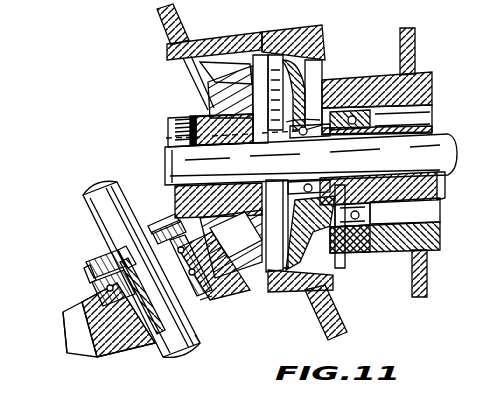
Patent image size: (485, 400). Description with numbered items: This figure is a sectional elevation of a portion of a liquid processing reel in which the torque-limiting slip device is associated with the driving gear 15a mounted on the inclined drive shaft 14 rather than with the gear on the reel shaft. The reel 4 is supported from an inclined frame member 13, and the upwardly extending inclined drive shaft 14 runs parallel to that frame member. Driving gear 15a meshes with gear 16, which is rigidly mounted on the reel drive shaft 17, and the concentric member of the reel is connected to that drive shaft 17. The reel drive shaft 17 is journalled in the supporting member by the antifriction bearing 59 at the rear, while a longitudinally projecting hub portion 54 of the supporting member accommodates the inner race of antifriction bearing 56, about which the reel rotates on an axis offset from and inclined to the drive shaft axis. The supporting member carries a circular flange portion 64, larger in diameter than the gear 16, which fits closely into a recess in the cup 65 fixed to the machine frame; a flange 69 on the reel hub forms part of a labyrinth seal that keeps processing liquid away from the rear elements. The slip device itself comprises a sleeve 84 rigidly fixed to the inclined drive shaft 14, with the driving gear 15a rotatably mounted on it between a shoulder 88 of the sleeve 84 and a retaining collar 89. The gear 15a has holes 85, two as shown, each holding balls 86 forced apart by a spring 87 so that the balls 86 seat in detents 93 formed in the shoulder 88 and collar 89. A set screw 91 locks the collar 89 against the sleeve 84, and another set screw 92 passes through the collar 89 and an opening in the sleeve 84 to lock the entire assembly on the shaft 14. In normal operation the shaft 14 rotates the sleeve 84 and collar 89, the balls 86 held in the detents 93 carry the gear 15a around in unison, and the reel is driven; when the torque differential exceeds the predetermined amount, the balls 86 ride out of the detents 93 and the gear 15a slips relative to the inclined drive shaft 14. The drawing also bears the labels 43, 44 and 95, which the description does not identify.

The inclined frame member 13 is at (340, 322).
The inclined drive shaft 14 is at (199, 342).
The driving gear 15a is at (88, 352).
The gear 16 is at (198, 115).
The reel drive shaft 17 is at (170, 162).
The housing 43 is at (477, 6).
The bearing housing 44 is at (378, 82).
The hub portion 54 is at (440, 180).
The antifriction bearing 56 is at (368, 228).
The antifriction bearing 59 is at (318, 182).
The flange portion 64 is at (322, 58).
The cup 65 is at (277, 30).
The flange 69 is at (418, 60).
The sleeve 84 is at (155, 348).
The holes 85 is at (115, 318).
The balls 86 is at (96, 300).
The spring 87 is at (143, 296).
The shoulder 88 is at (212, 322).
The retaining collar 89 is at (102, 262).
The set screw 91 is at (166, 228).
The set screw 92 is at (84, 275).
The detents 93 is at (208, 218).
The pin 95 is at (218, 308).
The reel 4 is at (448, 273).